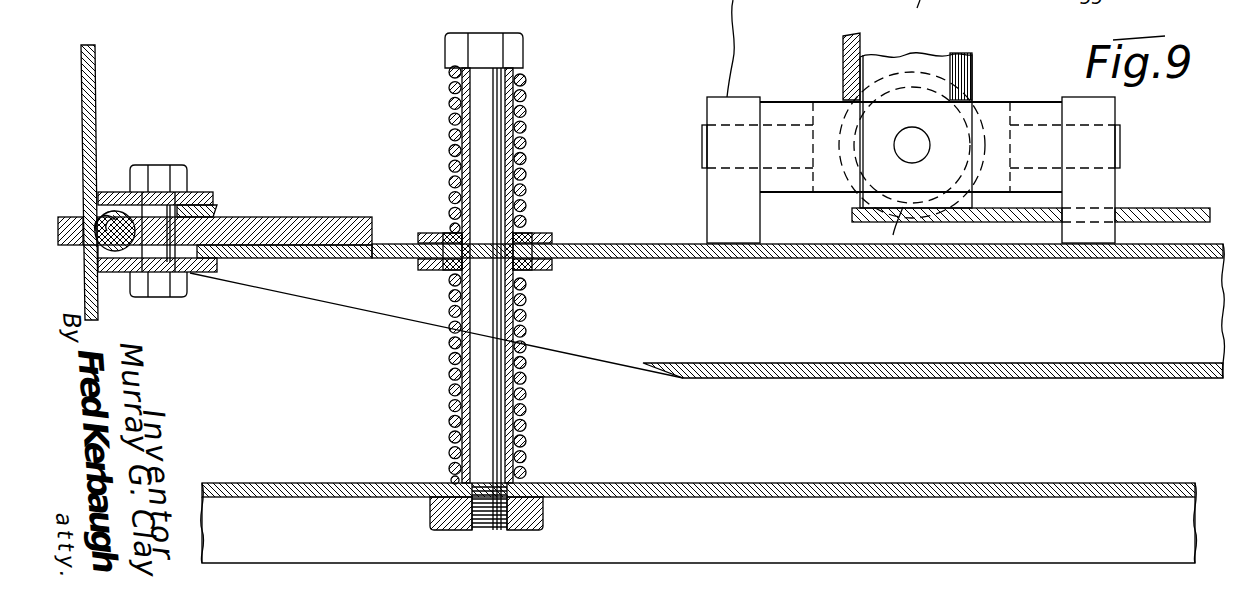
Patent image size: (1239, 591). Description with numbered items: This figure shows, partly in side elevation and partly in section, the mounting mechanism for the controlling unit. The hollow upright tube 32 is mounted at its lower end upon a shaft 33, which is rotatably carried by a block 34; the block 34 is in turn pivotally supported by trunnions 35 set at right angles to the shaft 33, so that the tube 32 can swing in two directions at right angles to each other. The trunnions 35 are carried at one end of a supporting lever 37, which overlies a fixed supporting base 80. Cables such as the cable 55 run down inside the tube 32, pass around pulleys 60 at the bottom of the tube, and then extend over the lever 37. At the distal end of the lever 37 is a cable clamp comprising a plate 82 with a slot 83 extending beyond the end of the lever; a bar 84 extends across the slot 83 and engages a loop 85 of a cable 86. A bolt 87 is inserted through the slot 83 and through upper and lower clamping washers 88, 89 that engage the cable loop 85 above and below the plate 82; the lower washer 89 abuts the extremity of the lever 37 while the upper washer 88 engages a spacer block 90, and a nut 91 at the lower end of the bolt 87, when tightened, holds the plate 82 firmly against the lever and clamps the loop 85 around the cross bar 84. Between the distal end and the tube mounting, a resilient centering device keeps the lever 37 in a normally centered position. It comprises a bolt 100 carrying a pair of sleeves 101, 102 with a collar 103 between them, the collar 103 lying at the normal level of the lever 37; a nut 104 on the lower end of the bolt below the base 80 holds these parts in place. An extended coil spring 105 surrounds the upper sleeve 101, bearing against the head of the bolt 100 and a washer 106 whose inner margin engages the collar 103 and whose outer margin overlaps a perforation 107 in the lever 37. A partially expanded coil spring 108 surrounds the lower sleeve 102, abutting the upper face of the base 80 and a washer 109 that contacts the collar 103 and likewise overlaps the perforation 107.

The hollow upright tube 32 is at (972, 65).
The shaft 33 is at (912, 127).
The block 34 is at (782, 97).
The trunnions 35 is at (702, 150).
The supporting lever 37 is at (323, 258).
The cable 55 is at (1174, 209).
The pulleys 60 is at (903, 207).
The supporting base 80 is at (680, 483).
The plate 82 is at (68, 247).
The slot 83 is at (82, 228).
The bar 84 is at (110, 262).
The loop 85 is at (112, 190).
The cable 86 is at (93, 100).
The bolt 87 is at (167, 197).
The upper clamping washer 88 is at (120, 192).
The lower clamping washer 89 is at (122, 272).
The spacer block 90 is at (207, 203).
The nut 91 is at (181, 295).
The bolt 100 is at (488, 90).
The upper sleeve 101 is at (507, 127).
The lower sleeve 102 is at (505, 408).
The collar 103 is at (515, 247).
The nut 104 is at (537, 520).
The extended coil spring 105 is at (450, 133).
The washer 106 is at (428, 233).
The perforation 107 is at (417, 258).
The partially expanded coil spring 108 is at (450, 388).
The washer 109 is at (550, 267).